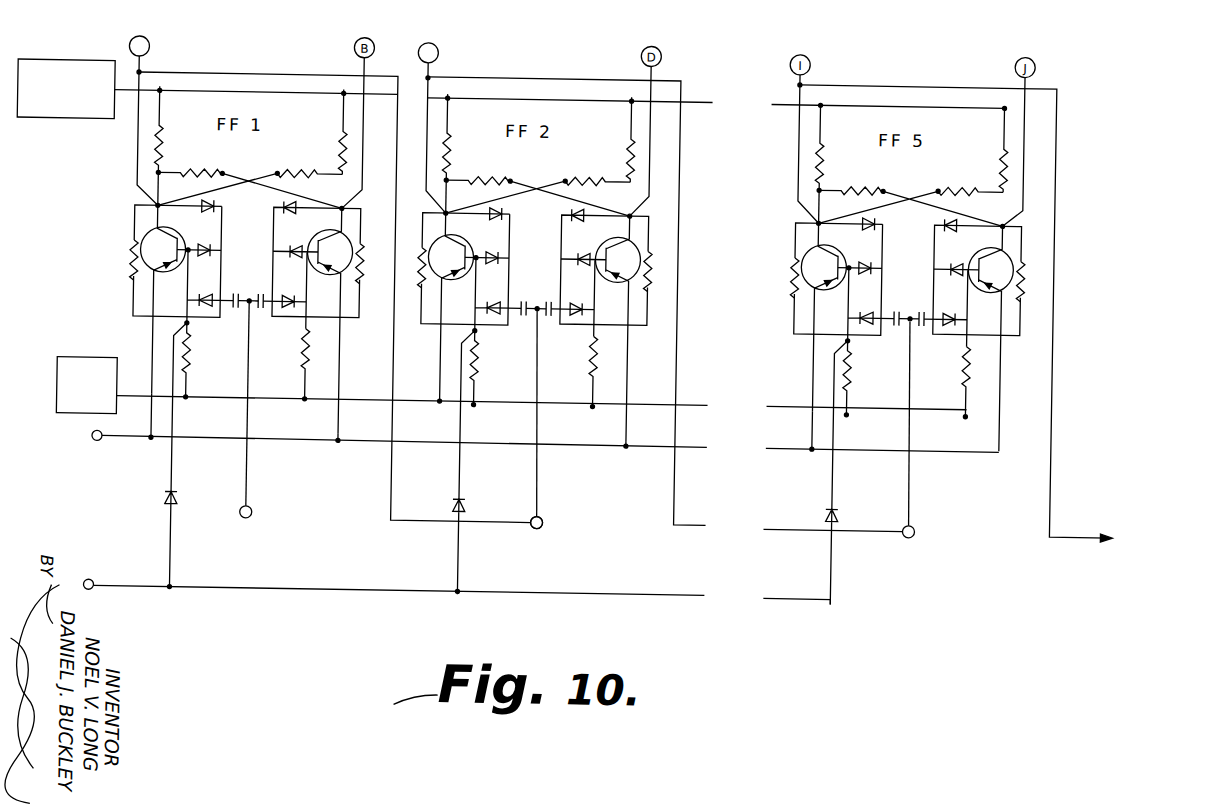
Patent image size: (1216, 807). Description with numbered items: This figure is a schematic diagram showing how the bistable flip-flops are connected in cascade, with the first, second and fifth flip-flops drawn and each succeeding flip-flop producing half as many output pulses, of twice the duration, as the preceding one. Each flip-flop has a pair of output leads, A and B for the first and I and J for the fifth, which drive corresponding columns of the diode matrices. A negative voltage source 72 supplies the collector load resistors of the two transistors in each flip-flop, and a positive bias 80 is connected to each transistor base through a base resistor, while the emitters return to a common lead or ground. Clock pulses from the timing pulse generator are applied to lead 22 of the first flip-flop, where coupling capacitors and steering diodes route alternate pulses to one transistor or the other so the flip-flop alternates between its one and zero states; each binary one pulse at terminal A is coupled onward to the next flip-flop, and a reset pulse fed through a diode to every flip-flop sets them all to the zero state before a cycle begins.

The negative voltage source 72 is at (41, 59).
The positive bias 80 is at (107, 354).
The lead 22 is at (255, 474).